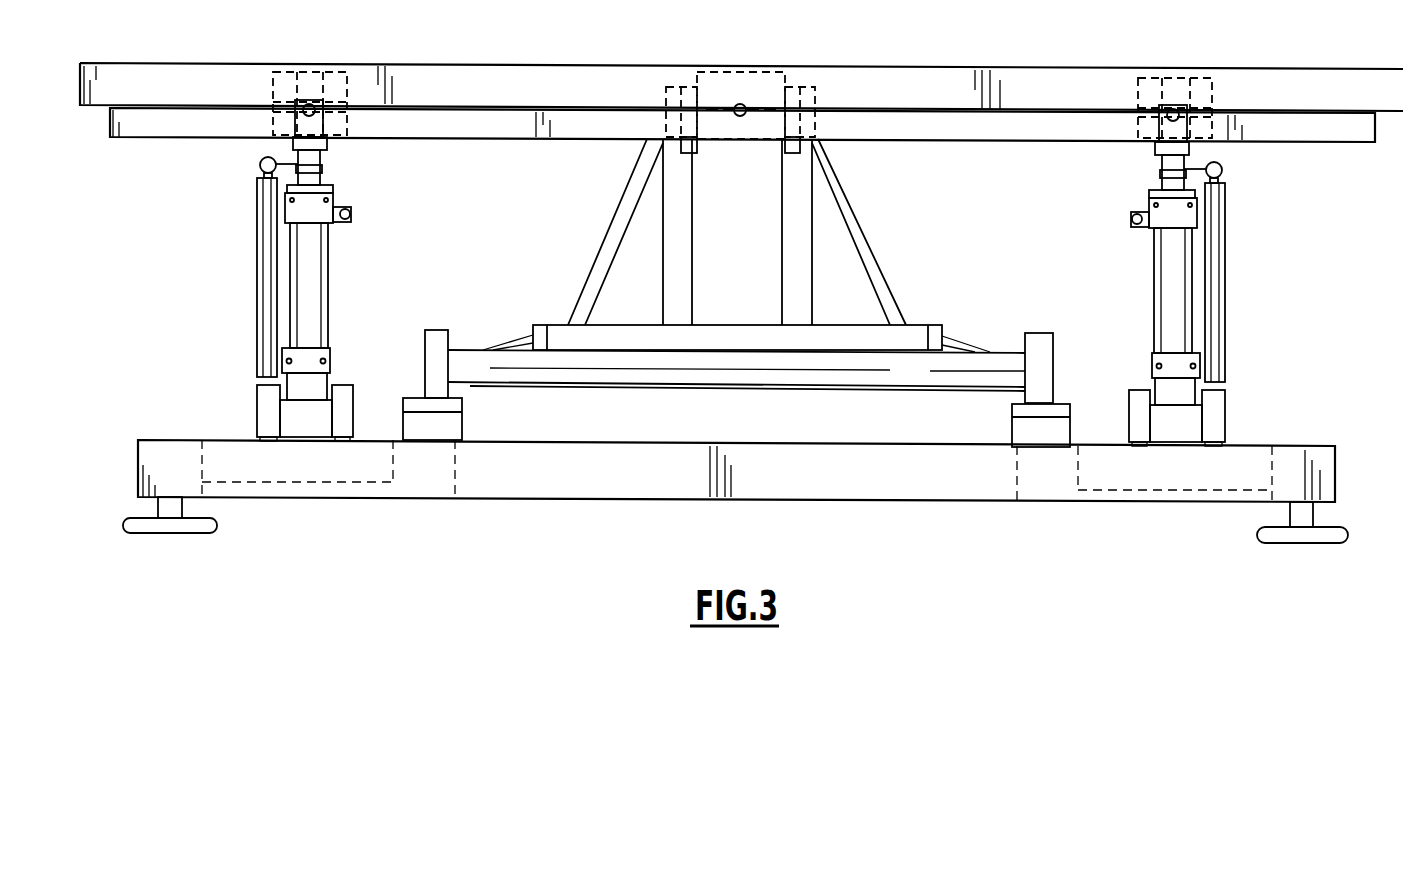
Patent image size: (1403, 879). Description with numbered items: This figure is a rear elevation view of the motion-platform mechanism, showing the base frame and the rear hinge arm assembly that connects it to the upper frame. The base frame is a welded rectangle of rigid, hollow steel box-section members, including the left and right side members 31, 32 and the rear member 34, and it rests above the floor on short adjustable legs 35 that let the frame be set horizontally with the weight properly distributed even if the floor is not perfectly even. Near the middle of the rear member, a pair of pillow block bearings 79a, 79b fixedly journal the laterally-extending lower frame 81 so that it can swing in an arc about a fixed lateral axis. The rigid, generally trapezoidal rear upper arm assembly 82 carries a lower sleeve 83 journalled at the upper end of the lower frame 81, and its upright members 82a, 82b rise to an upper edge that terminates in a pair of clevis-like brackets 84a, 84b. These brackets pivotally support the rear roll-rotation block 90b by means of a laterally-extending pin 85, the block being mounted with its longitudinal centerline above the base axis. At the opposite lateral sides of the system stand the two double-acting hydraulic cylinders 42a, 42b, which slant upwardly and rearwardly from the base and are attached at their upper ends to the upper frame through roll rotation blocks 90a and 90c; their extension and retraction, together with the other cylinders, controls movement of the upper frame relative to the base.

The left side member 31 is at (178, 470).
The right side member 32 is at (1285, 462).
The rear member 34 is at (820, 488).
The adjustable legs 35 is at (160, 510).
The hydraulic cylinder 42a is at (307, 302).
The hydraulic cylinder 42b is at (1172, 280).
The pillow block bearing 79a is at (437, 337).
The pillow block bearing 79b is at (1037, 343).
The lower frame 81 is at (923, 381).
The upper frame 82 is at (753, 258).
The left diagonal brace 82a is at (678, 188).
The right diagonal brace 82b is at (800, 203).
The lower sleeve 83 is at (773, 340).
The clevis-like bracket 84a is at (690, 88).
The clevis-like bracket 84b is at (792, 88).
The laterally-extending pin 85 is at (724, 118).
The roll rotation block 90a is at (333, 82).
The rear roll-rotation block 90b is at (717, 78).
The roll rotation block 90c is at (1175, 87).